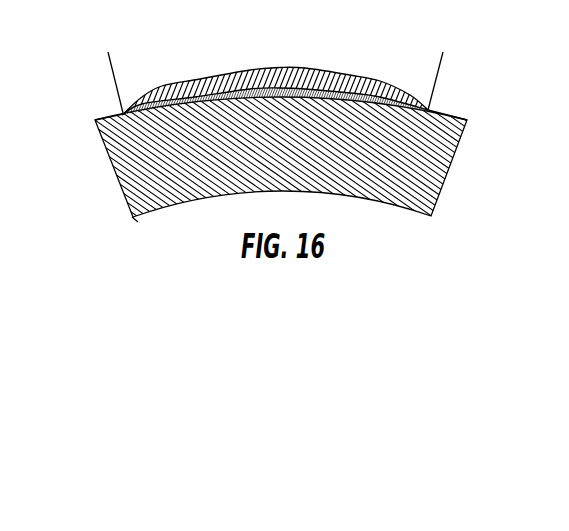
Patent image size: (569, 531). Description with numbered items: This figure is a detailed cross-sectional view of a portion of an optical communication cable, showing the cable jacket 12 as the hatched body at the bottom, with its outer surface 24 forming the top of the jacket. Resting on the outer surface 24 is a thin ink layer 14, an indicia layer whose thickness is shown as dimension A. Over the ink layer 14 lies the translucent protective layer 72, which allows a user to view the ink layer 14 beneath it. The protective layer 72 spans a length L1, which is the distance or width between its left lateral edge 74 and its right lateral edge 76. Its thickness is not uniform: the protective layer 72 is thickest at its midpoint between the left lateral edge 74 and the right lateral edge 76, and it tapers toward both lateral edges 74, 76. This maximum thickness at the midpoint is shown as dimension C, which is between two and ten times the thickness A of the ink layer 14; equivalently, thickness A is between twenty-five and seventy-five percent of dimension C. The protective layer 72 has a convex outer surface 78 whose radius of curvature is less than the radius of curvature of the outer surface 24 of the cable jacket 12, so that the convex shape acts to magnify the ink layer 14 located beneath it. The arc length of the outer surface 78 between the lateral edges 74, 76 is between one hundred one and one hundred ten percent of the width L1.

The cable jacket 12 is at (433, 212).
The ink layer 14 is at (193, 85).
The protective layer 72 is at (373, 80).
The convex outer surface 78 is at (160, 83).
The right lateral edge 76 is at (428, 110).
The left lateral edge 74 is at (113, 112).
The outer surface of cable jacket 24 is at (470, 106).
The length of protective layer L1 is at (441, 58).
The maximum thickness of protective layer C is at (270, 67).
The thickness of ink layer A is at (127, 117).